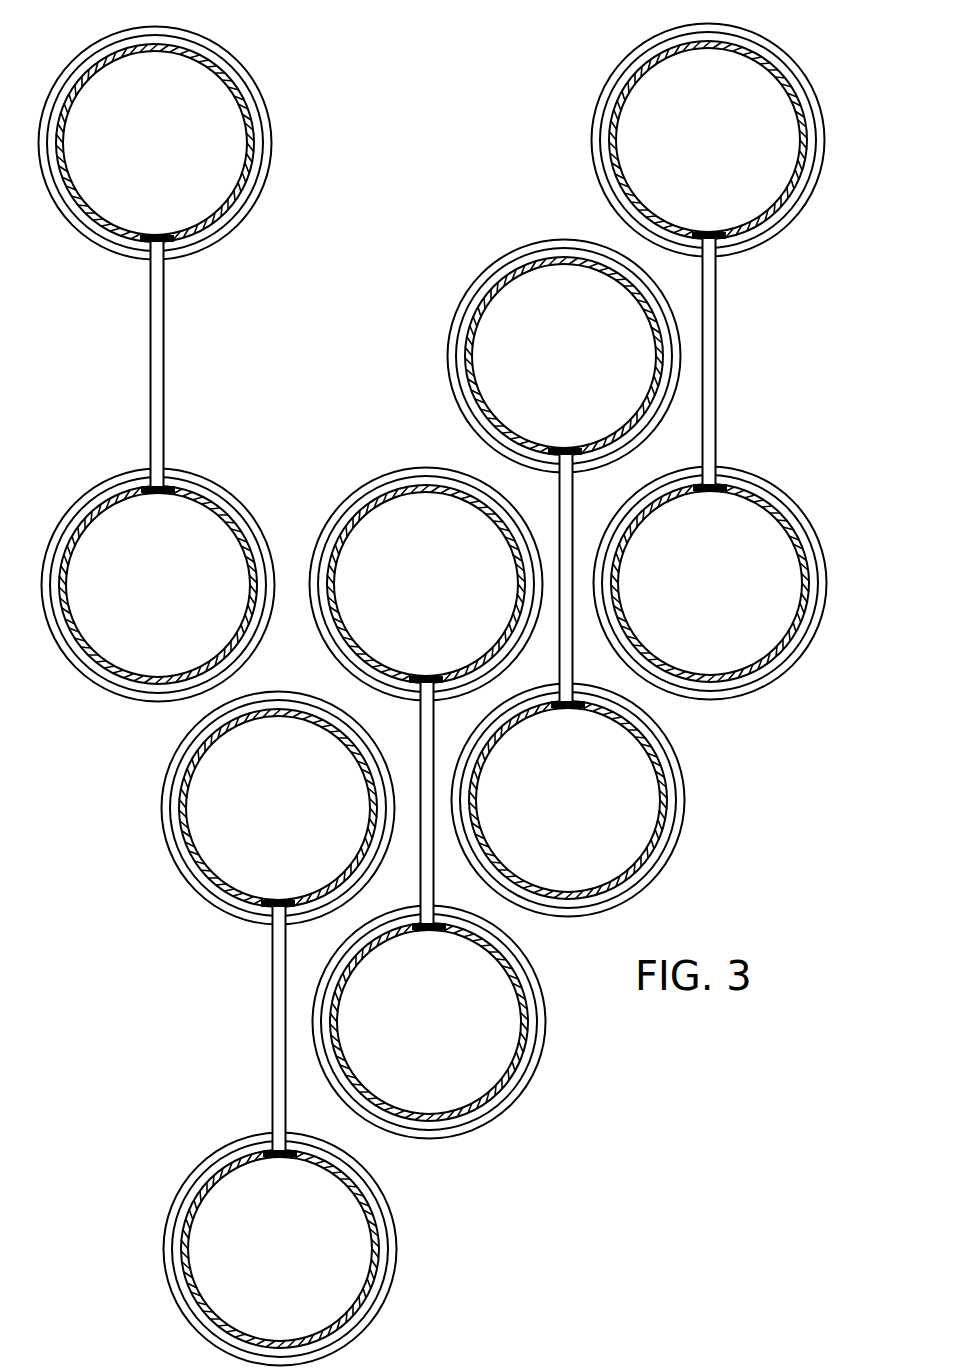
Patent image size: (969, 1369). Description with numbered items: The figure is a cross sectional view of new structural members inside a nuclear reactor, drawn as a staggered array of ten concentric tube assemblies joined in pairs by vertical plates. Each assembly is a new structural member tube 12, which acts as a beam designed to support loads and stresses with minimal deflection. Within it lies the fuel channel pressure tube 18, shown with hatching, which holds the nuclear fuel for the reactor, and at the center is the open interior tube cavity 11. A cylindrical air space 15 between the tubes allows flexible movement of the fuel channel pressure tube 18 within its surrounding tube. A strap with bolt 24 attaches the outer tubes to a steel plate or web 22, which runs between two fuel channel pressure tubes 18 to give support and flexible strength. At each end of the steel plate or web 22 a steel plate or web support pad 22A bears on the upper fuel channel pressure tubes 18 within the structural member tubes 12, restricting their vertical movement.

The interior tube cavity 11 is at (423, 694).
The new structural member tubes 12 is at (423, 694).
The cylindrical air space 15 is at (179, 143).
The fuel channel pressure tube 18 is at (166, 132).
The strap with bolt 24 is at (191, 143).
The steel plate or web 22 is at (152, 308).
The steel plate or web support pad 22A is at (156, 254).